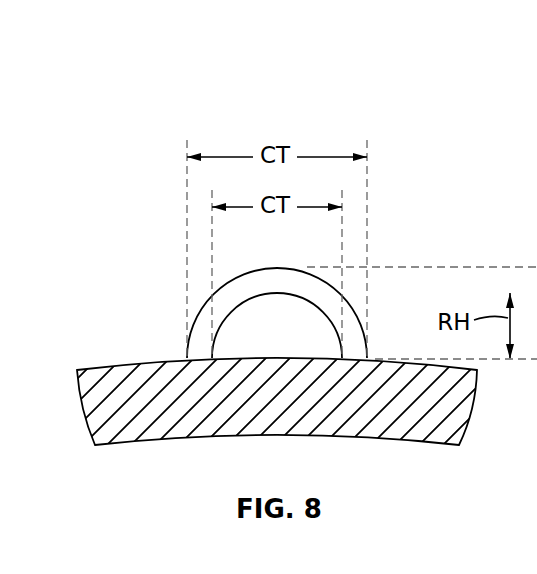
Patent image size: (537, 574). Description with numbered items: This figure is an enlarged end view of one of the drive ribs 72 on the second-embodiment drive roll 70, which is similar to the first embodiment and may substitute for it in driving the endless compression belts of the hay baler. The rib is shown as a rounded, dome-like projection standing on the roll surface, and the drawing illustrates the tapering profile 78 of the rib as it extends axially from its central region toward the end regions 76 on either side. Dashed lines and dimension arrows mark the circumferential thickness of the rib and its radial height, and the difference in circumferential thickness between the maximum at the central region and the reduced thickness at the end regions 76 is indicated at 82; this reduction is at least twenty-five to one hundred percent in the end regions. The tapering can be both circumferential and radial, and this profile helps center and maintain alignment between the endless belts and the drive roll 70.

The drive roll 70 is at (327, 360).
The drive ribs 72 is at (287, 325).
The end regions 76 is at (202, 306).
The tapering profile 78 is at (206, 285).
The circumferential thickness difference 82 is at (198, 133).